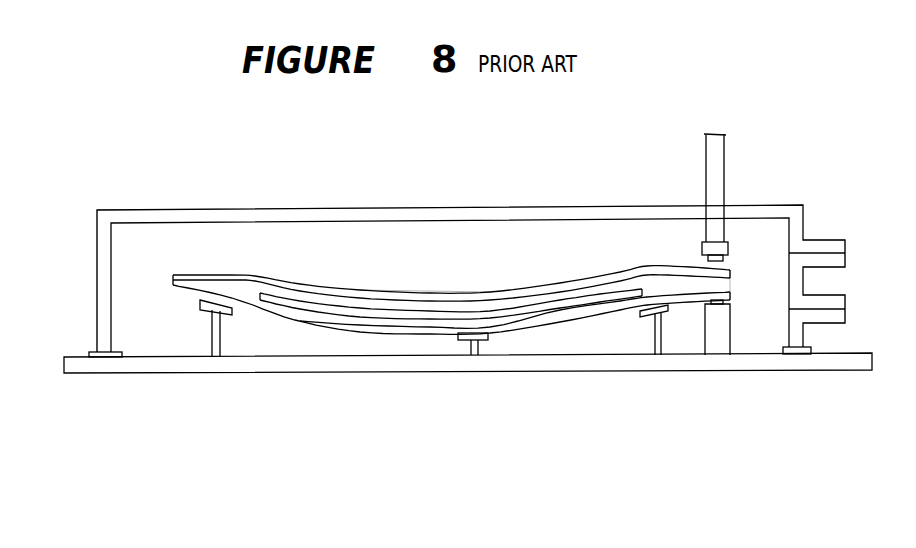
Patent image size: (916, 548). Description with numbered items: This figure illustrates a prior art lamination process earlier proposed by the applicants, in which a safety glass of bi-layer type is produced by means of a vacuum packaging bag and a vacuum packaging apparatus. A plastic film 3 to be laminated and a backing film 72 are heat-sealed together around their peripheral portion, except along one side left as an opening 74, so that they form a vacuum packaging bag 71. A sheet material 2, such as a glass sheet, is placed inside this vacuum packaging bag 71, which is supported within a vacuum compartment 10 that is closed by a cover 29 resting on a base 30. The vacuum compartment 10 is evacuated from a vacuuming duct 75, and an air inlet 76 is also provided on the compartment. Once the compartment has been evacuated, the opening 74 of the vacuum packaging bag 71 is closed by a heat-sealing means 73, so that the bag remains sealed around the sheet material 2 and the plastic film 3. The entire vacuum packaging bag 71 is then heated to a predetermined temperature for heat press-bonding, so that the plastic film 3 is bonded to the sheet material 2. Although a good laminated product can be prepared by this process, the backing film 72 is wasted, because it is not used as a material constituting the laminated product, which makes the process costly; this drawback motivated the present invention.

The vacuum compartment 10 is at (197, 257).
The sheet material 2 is at (340, 297).
The plastic film 3 is at (295, 278).
The cover 29 is at (441, 209).
The base 30 is at (492, 362).
The vacuum packaging bag 71 is at (390, 291).
The backing film 72 is at (572, 322).
The heat-sealing means 73 is at (713, 250).
The opening 74 is at (730, 287).
The vacuuming duct 75 is at (827, 258).
The air inlet 76 is at (832, 312).